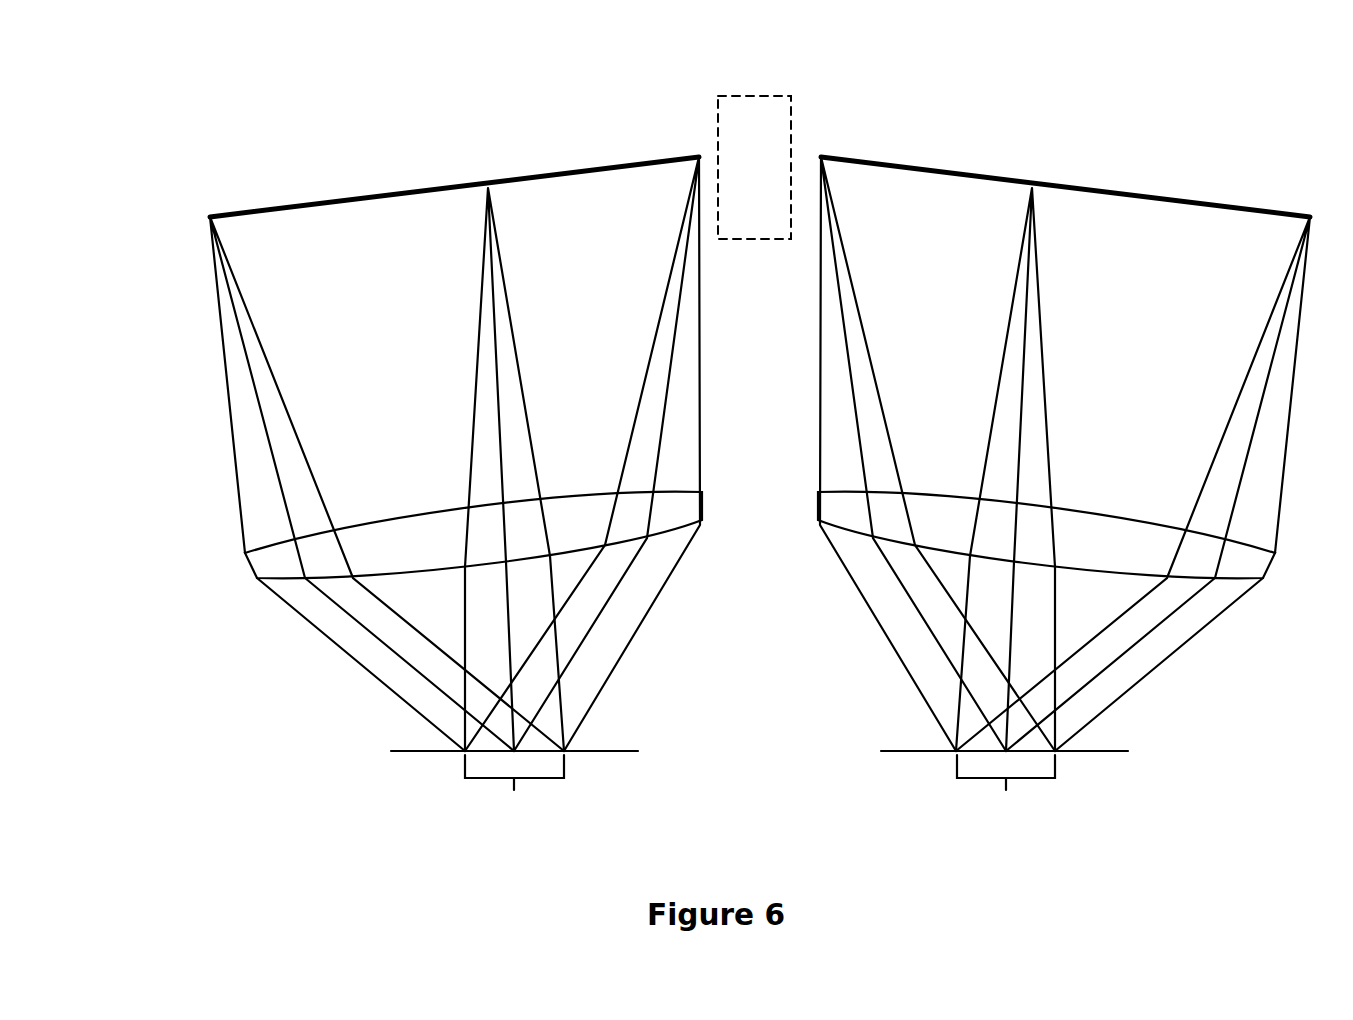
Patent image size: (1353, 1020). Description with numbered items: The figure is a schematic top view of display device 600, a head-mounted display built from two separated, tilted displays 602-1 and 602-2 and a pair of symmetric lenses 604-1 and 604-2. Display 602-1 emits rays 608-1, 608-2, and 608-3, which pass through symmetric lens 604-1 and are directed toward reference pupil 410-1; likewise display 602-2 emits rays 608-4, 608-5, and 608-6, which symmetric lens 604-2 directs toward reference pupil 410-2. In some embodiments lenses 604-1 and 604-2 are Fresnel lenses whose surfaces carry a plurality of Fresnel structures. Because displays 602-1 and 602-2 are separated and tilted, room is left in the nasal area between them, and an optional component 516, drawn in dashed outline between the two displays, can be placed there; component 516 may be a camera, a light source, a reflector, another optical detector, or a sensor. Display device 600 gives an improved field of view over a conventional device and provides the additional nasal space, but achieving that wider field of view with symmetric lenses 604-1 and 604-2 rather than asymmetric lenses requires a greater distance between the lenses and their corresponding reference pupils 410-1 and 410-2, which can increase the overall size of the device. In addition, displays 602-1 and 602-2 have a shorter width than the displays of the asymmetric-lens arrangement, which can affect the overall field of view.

The display device 600 is at (226, 32).
The component 516 is at (773, 139).
The display 602-1 is at (388, 192).
The display 602-2 is at (1118, 190).
The lens 604-1 is at (378, 553).
The lens 604-2 is at (1083, 553).
The ray 608-1 is at (230, 462).
The ray 608-2 is at (500, 402).
The ray 608-3 is at (697, 328).
The ray 608-4 is at (820, 400).
The ray 608-5 is at (1010, 315).
The ray 608-6 is at (1287, 440).
The reference pupil 410-1 is at (509, 803).
The reference pupil 410-2 is at (1000, 805).